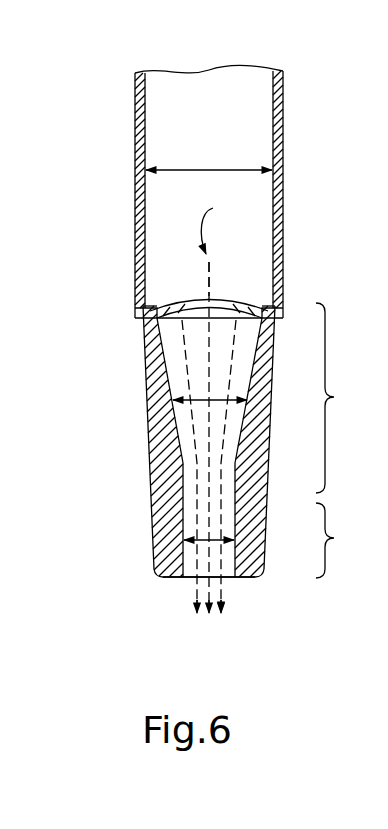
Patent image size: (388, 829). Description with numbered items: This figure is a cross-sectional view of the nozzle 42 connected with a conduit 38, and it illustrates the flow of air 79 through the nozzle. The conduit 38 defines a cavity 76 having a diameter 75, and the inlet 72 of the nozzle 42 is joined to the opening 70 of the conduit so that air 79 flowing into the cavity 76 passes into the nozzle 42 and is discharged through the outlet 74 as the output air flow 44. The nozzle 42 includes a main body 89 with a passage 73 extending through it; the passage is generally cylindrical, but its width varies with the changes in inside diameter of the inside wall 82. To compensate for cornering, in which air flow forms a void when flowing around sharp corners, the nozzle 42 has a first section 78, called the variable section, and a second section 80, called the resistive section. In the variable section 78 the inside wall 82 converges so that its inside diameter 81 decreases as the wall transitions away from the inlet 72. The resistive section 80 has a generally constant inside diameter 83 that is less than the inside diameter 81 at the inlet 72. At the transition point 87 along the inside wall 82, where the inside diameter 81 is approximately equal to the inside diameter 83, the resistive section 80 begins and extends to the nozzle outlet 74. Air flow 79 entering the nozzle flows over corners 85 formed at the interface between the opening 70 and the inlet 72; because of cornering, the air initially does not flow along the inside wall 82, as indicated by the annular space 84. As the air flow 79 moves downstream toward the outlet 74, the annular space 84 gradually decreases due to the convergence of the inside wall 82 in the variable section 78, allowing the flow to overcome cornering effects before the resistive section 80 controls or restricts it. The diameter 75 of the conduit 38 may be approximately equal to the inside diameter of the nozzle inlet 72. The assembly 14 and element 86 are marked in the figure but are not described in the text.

The spray nozzle assembly 14 is at (106, 97).
The conduit 38 is at (284, 141).
The nozzle 42 is at (148, 541).
The output air flow 44 is at (195, 620).
The opening 70 is at (177, 300).
The inlet 72 is at (234, 300).
The passage 73 is at (180, 347).
The outlet 74 is at (237, 578).
The diameter of the conduit 75 is at (230, 168).
The cavity 76 is at (222, 98).
The first section 78 is at (334, 397).
The air flow 79 is at (218, 222).
The second section 80 is at (334, 538).
The inside diameter of variable section 81 is at (189, 402).
The inside wall 82 is at (148, 323).
The inside diameter of resistive section 83 is at (186, 576).
The annular space 84 is at (178, 362).
The corners 85 is at (150, 303).
The converging inner surface 86 is at (262, 560).
The transition point 87 is at (181, 498).
The main body 89 is at (258, 489).